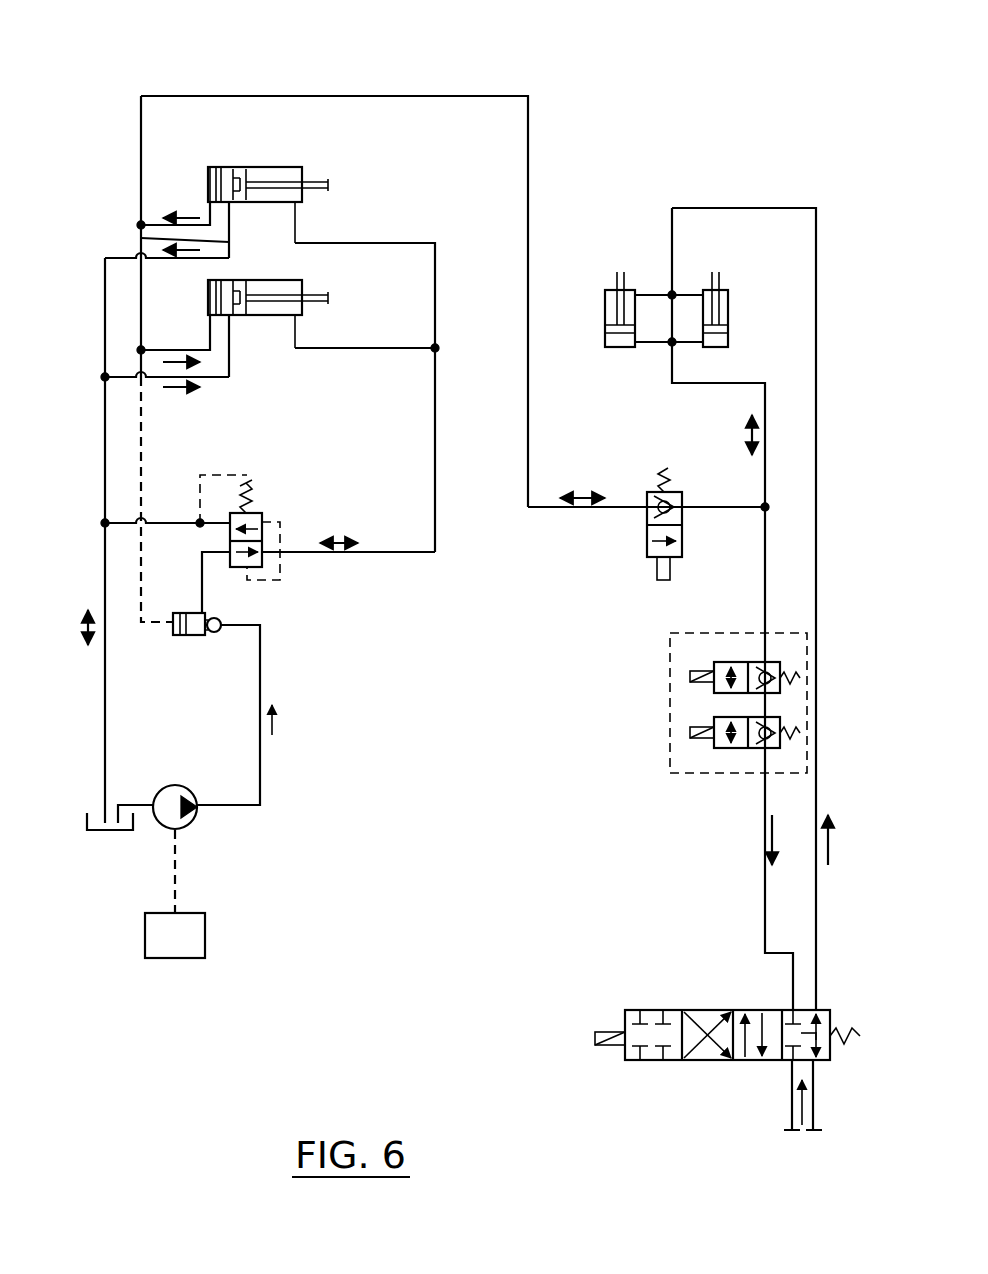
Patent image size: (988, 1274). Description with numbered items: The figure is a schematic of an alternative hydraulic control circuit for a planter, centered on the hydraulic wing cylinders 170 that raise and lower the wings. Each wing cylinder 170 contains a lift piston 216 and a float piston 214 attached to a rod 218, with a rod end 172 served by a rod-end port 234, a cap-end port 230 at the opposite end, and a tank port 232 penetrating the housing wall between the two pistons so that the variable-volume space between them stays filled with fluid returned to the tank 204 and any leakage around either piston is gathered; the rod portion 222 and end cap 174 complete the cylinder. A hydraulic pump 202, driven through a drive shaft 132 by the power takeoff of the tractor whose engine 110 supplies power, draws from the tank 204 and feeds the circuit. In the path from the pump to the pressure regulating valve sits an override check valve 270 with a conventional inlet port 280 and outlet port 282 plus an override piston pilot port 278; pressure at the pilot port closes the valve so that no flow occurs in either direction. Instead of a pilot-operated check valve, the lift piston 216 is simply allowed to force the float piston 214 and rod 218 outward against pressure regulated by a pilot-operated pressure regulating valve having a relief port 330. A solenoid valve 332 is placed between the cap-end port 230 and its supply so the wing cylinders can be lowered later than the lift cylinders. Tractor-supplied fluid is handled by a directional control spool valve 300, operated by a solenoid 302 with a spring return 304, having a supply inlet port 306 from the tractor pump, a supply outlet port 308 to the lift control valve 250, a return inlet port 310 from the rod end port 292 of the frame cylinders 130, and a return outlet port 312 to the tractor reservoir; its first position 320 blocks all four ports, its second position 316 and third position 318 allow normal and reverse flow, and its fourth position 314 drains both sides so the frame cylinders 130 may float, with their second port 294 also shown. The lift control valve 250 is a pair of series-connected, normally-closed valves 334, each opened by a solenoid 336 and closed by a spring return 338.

The hydraulic wing cylinder 170 is at (300, 152).
The rod end 172 is at (306, 178).
The cylinder end cap 174 is at (204, 180).
The lift piston 216 is at (218, 166).
The float piston 214 is at (240, 166).
The piston rod portion 222 is at (243, 204).
The rod 218 is at (328, 188).
The rod-end port 234 is at (303, 201).
The cap-end port 230 is at (208, 205).
The tank port 232 is at (231, 204).
The relief port 330 is at (226, 524).
The override check valve 270 is at (178, 612).
The override piston pilot port 278 is at (172, 628).
The inlet port 280 is at (220, 633).
The outlet port 282 is at (222, 618).
The hydraulic pump 202 is at (176, 785).
The tank 204 is at (87, 823).
The drive shaft 132 is at (178, 885).
The engine 110 is at (205, 935).
The rod end port 292 is at (640, 292).
The brake actuator return line 294 is at (680, 346).
The frame cylinder 130 is at (606, 292).
The solenoid valve 332 is at (628, 555).
The lift control valve 250 is at (665, 775).
The solenoid-operated normally-closed valve 334 is at (718, 660).
The solenoid 336 is at (690, 672).
The spring return 338 is at (801, 677).
The directional control spool valve 300 is at (678, 998).
The solenoid 302 is at (600, 1030).
The spring return 304 is at (858, 1032).
The first position 320 is at (635, 1062).
The third position 318 is at (690, 1062).
The second position 316 is at (735, 1062).
The supply inlet port 306 is at (785, 1062).
The supply outlet port 308 is at (793, 1005).
The return inlet port 310 is at (818, 1010).
The return outlet port 312 is at (818, 1062).
The fourth position 314 is at (800, 1130).